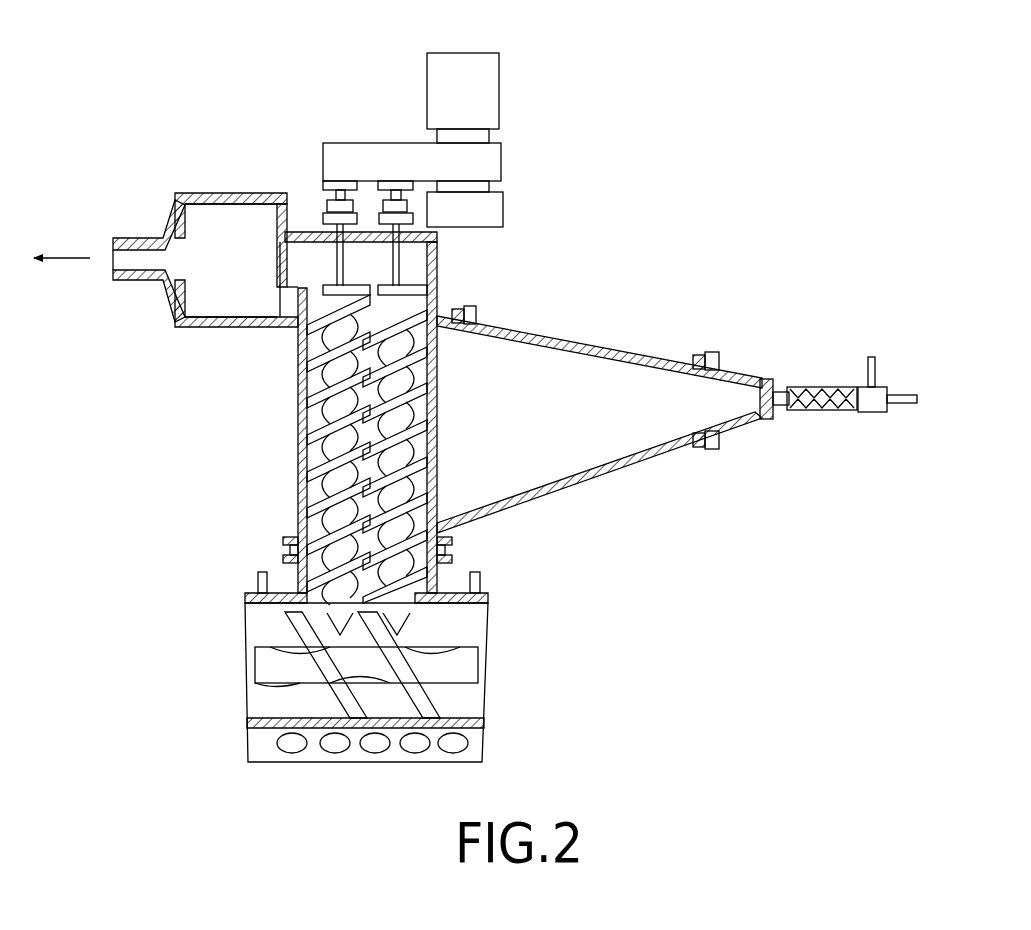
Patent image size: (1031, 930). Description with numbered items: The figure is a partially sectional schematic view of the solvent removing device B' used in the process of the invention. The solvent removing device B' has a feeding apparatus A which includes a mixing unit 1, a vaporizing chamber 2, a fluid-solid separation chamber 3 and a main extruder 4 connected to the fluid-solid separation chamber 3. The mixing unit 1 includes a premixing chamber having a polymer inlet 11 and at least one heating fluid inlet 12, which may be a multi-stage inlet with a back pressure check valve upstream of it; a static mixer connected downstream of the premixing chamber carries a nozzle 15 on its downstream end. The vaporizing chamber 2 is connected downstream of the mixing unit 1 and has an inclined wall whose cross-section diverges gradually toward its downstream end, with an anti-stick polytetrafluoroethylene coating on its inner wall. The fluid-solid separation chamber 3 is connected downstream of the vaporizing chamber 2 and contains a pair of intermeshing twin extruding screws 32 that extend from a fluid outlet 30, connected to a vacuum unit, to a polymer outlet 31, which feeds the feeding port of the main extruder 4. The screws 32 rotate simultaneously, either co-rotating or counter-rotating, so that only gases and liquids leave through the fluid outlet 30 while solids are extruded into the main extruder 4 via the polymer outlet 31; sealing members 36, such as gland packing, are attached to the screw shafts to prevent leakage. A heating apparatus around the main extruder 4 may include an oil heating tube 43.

The mixing unit 1 is at (803, 356).
The vaporizing chamber 2 is at (620, 350).
The fluid-solid separation chamber 3 is at (297, 461).
The main extruder 4 is at (492, 672).
The polymer inlet 11 is at (917, 398).
The heating fluid inlet 12 is at (872, 355).
The nozzle 15 is at (760, 405).
The fluid outlet 30 is at (125, 239).
The polymer outlet 31 is at (425, 608).
The intermeshing twin extruding screws 32 is at (300, 418).
The sealing members 36 is at (328, 222).
The oil heating tube 43 is at (475, 745).
The feeding apparatus A is at (645, 490).
The solvent removing device B' is at (413, 126).